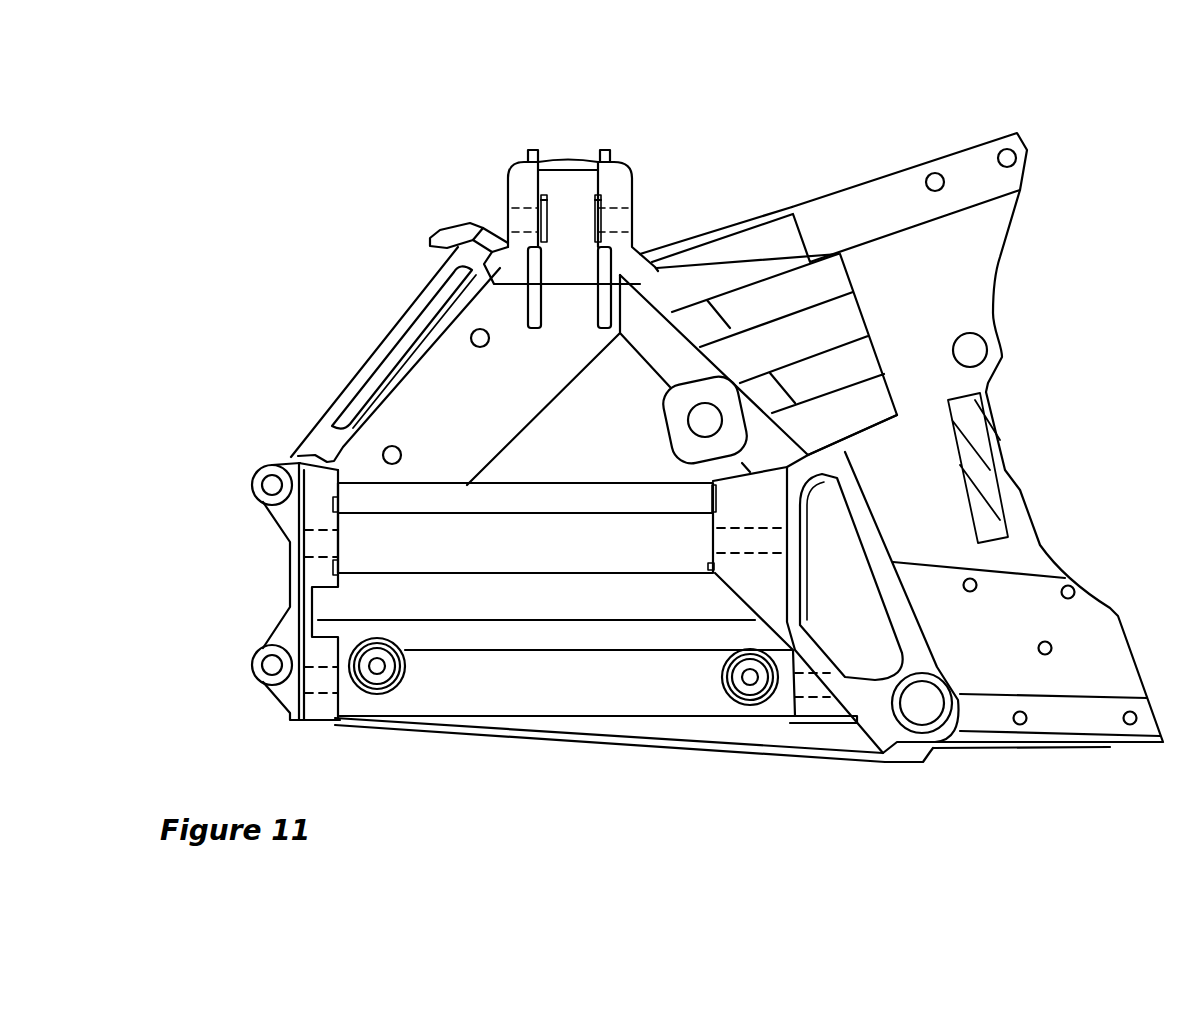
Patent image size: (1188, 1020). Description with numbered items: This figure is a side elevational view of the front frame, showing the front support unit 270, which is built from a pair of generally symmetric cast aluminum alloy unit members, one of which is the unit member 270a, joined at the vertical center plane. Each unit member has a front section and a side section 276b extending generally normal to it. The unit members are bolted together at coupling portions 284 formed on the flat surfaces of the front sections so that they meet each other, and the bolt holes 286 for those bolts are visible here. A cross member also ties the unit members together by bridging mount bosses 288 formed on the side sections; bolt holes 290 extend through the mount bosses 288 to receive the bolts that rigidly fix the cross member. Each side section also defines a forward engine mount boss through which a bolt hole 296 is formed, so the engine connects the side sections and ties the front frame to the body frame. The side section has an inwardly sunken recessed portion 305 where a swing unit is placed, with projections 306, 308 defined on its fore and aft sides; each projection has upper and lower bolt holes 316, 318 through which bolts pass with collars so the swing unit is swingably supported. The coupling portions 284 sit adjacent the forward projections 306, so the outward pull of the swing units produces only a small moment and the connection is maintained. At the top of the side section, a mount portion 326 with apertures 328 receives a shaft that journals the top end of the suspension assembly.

The front support unit 270 is at (795, 200).
The unit member 270a is at (887, 190).
The side section 276b is at (689, 745).
The coupling portions 284 is at (255, 616).
The bolt holes 286 is at (272, 483).
The mount bosses 288 is at (720, 372).
The bolt holes 290 is at (693, 423).
The bolt hole 296 is at (978, 352).
The recessed portion 305 is at (524, 698).
The projection 306 is at (335, 585).
The projection 308 is at (770, 587).
The upper bolt holes 316 is at (322, 544).
The lower bolt holes 318 is at (310, 693).
The mount portion 326 is at (607, 173).
The apertures 328 is at (527, 205).